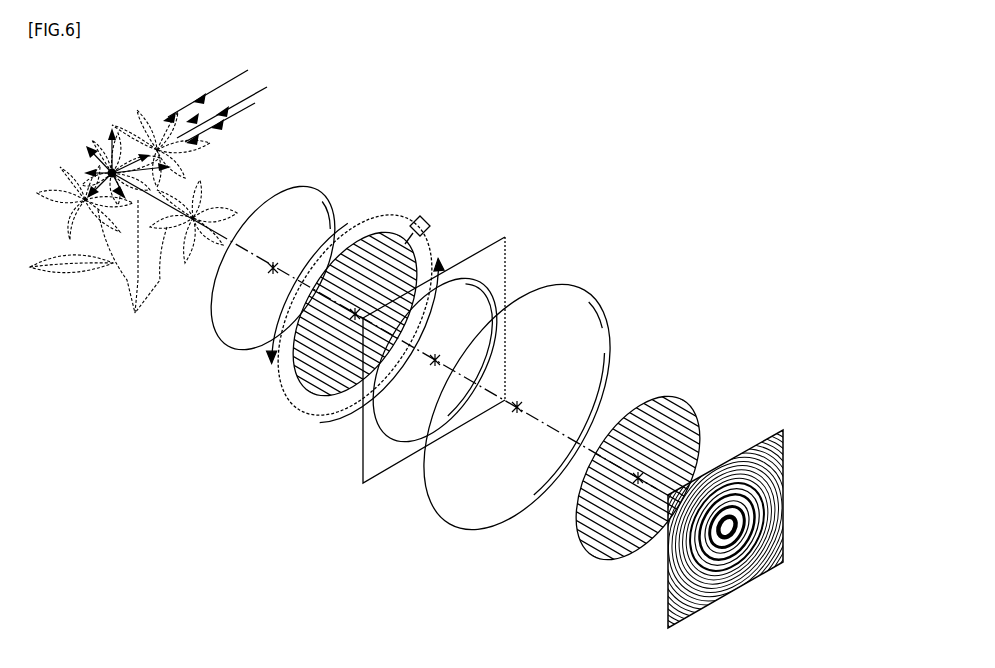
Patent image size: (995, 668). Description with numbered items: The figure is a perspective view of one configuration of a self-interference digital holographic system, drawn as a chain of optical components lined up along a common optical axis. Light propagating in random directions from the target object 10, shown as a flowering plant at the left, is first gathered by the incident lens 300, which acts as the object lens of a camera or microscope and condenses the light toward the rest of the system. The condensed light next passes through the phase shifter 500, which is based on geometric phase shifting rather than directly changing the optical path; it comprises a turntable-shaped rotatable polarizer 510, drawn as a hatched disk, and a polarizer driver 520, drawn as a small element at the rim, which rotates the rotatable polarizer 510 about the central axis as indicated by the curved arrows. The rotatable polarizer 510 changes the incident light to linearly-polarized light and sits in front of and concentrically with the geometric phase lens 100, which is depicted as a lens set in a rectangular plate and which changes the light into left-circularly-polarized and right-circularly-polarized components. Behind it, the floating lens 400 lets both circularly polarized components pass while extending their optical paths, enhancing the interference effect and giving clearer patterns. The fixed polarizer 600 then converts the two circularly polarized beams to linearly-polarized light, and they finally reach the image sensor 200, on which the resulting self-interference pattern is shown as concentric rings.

The target object 10 is at (135, 318).
The geometric phase lens 100 is at (500, 240).
The image sensor 200 is at (762, 437).
The incident lens 300 is at (303, 187).
The floating lens 400 is at (572, 305).
The phase shifter 500 is at (440, 143).
The rotatable polarizer 510 is at (377, 232).
The polarizer driver 520 is at (424, 217).
The fixed polarizer 600 is at (680, 397).